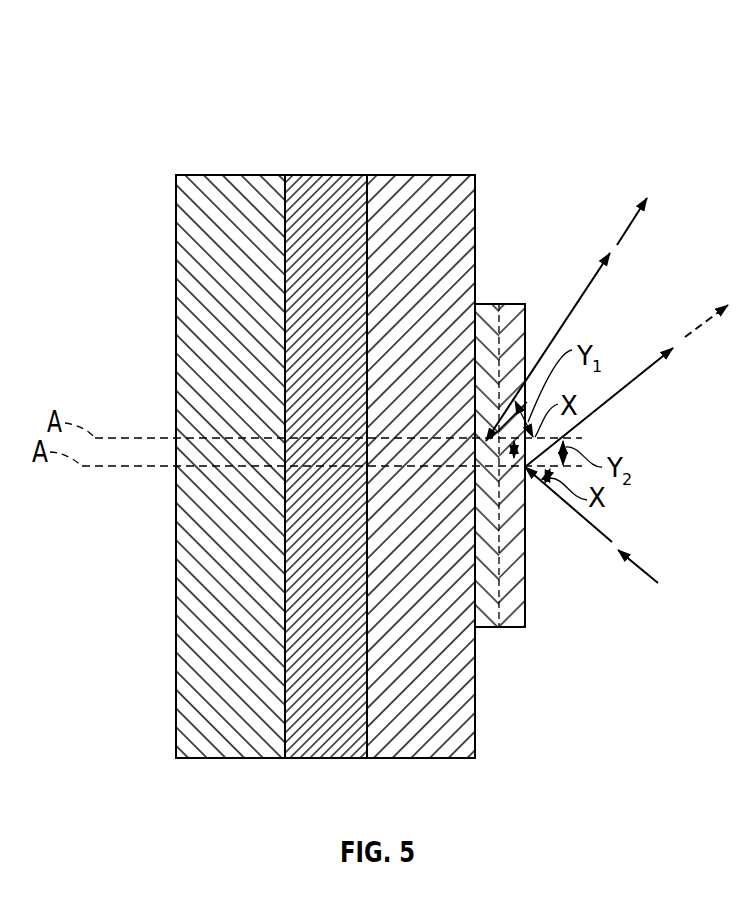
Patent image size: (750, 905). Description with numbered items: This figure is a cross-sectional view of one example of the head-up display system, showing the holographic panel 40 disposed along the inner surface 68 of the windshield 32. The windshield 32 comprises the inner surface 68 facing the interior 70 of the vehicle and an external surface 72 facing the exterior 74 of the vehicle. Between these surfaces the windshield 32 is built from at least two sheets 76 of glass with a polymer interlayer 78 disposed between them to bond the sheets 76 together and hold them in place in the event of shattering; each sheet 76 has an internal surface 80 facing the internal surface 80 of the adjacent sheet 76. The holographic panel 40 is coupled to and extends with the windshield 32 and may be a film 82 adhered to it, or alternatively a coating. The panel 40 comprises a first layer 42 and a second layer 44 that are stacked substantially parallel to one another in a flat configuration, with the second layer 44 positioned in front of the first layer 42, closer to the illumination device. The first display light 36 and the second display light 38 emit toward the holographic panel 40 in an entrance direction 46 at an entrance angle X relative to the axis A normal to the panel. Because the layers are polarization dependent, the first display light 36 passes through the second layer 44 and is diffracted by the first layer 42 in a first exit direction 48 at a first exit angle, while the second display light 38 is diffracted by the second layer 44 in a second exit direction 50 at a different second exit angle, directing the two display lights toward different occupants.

The windshield 32 is at (475, 115).
The first display light 36 is at (597, 268).
The second display light 38 is at (648, 362).
The holographic panel 40 is at (517, 282).
The first layer 42 is at (485, 628).
The second layer 44 is at (510, 628).
The entrance direction 46 is at (640, 570).
The first exit direction 48 is at (627, 222).
The second exit direction 50 is at (700, 320).
The inner surface 68 is at (474, 712).
The interior 70 is at (614, 706).
The external surface 72 is at (177, 712).
The exterior 74 is at (140, 670).
The sheets 76 is at (228, 175).
The polymer interlayer 78 is at (326, 175).
The internal surface 80 is at (287, 750).
The film 82 is at (485, 300).